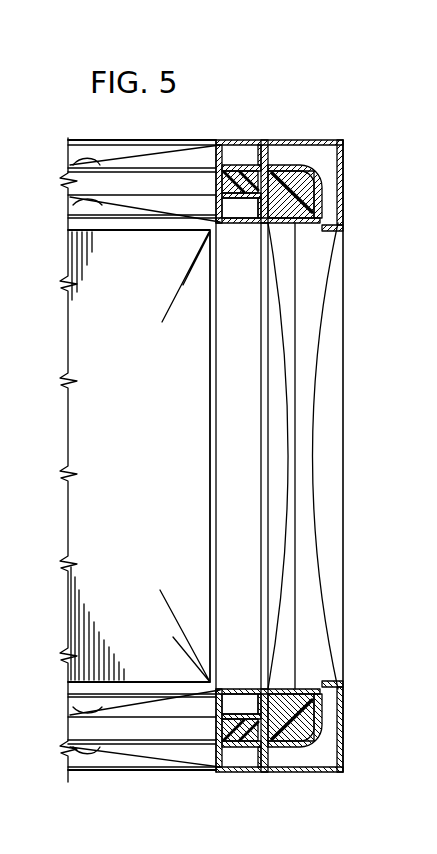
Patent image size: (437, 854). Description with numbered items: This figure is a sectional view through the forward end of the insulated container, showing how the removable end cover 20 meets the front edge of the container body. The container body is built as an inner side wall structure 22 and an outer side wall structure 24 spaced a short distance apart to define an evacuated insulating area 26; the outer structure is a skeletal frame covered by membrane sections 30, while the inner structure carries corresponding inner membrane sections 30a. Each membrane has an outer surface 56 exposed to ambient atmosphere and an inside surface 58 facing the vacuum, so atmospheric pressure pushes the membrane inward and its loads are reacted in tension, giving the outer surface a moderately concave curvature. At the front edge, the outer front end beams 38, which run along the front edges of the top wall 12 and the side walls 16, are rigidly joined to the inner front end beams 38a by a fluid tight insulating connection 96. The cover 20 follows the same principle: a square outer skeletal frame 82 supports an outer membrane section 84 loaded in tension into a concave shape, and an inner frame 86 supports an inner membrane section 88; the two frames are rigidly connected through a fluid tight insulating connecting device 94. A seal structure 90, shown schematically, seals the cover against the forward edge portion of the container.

The top wall 12 is at (67, 300).
The side walls 16 is at (150, 138).
The removable end cover 20 is at (355, 338).
The inner side wall structure 22 is at (100, 230).
The outer side wall structure 24 is at (92, 131).
The evacuated insulating area 26 is at (162, 190).
The membrane sections 30 is at (92, 156).
The inner membrane sections 30a is at (108, 202).
The front end beams 38 is at (246, 141).
The inner front end beams 38a is at (205, 255).
The outer surface of membrane 56 is at (110, 748).
The inside surface of membrane 58 is at (160, 752).
The outer skeletal frame of cover 82 is at (348, 142).
The outer membrane section of cover 84 is at (334, 268).
The inner frame of cover 86 is at (262, 215).
The inner membrane section of cover 88 is at (280, 292).
The seal structure 90 is at (266, 141).
The connecting device 94 is at (306, 210).
The fluid tight insulating connection 96 is at (212, 184).